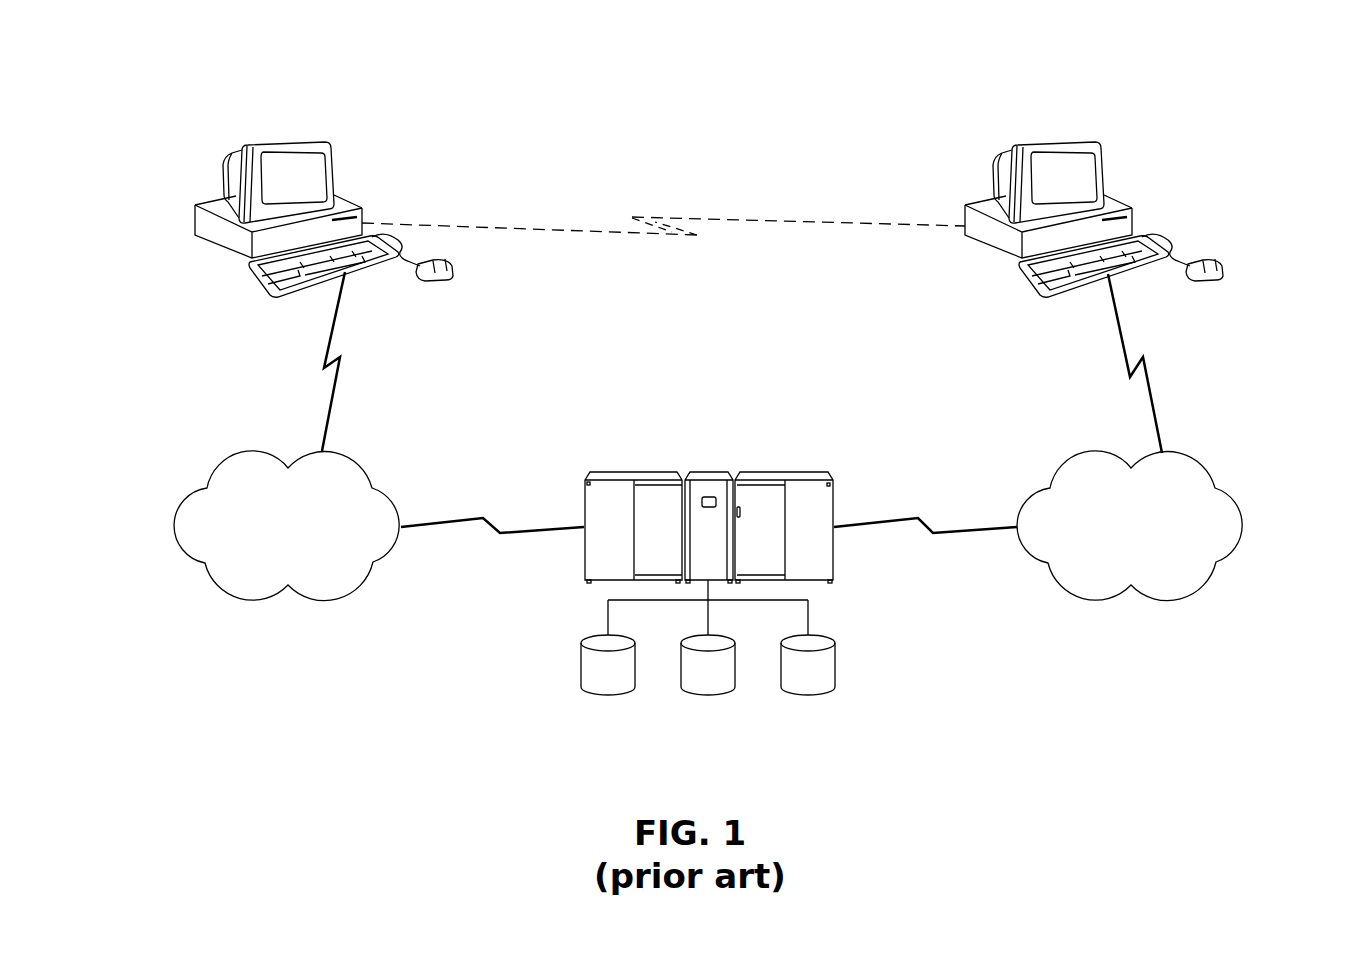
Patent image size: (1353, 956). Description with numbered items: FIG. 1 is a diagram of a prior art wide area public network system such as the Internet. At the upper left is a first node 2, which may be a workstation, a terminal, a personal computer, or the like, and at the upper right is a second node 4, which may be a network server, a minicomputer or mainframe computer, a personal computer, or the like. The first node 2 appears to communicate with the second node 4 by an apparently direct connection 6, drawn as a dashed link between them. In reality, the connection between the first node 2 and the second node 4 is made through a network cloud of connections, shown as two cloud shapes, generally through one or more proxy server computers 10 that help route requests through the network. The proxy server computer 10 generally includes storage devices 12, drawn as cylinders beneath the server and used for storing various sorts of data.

The first node 2 is at (323, 140).
The second node 4 is at (1093, 147).
The apparently direct connection 6 is at (637, 215).
The proxy server computer 10 is at (710, 472).
The storage device 12 is at (820, 643).